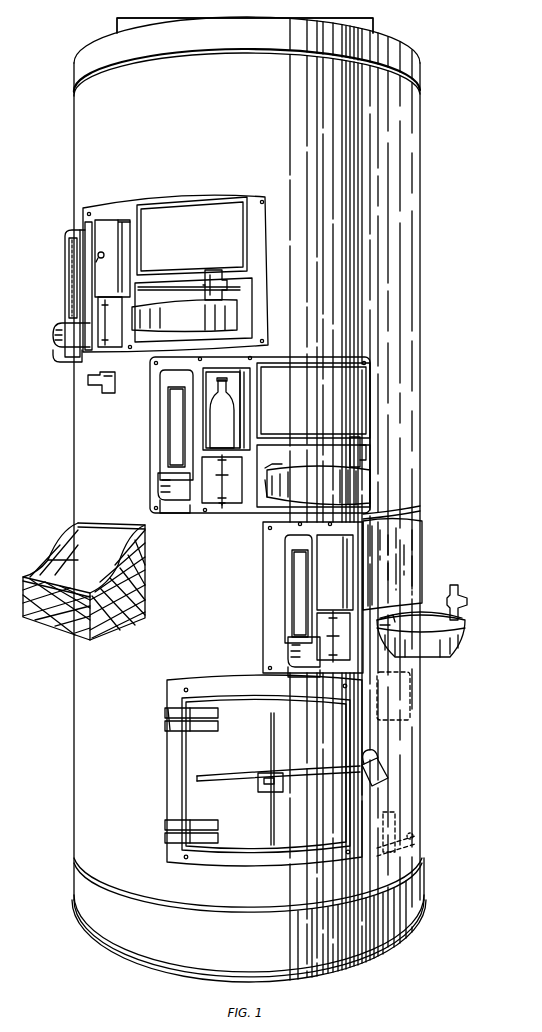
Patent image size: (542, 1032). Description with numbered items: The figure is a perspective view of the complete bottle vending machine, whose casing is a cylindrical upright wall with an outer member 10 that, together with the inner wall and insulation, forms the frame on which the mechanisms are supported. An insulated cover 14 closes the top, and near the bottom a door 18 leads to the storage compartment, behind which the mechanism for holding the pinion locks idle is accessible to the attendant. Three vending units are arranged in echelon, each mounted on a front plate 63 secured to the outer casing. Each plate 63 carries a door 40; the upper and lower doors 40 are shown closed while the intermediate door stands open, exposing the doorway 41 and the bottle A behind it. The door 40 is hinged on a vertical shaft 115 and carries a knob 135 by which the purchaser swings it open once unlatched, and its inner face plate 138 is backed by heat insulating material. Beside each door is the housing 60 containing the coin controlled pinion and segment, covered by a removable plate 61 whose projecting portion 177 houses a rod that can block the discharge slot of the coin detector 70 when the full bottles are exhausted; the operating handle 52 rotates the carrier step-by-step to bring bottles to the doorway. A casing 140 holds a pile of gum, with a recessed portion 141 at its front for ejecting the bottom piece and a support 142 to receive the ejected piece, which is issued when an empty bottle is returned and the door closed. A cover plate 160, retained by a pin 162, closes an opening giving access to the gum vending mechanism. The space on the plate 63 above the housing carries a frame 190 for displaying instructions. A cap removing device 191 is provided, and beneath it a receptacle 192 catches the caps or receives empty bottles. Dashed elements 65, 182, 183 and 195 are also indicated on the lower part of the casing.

The outer member 10 is at (249, 499).
The cover 14 is at (245, 30).
The door 18 is at (276, 770).
The door 40 is at (224, 415).
The doorway 41 is at (215, 382).
The operating handle 52 is at (265, 497).
The housing 60 is at (483, 650).
The removable plate 61 is at (472, 619).
The front plate 63 is at (261, 249).
The tray lip 65 is at (267, 468).
The coin detector 70 is at (227, 285).
The vertical shaft 115 is at (128, 248).
The knob 135 is at (107, 267).
The inner face plate 138 is at (240, 422).
The casing 140 is at (65, 277).
The recessed portion 141 is at (53, 338).
The support 142 is at (67, 360).
The cover plate 160 is at (113, 327).
The pin 162 is at (220, 504).
The projecting portion 177 is at (189, 290).
The latch 182 is at (385, 813).
The lock receiver 183 is at (400, 863).
The frame 190 is at (297, 369).
The cap removing device 191 is at (100, 388).
The receptacle 192 is at (137, 620).
The hidden compartment 195 is at (408, 718).